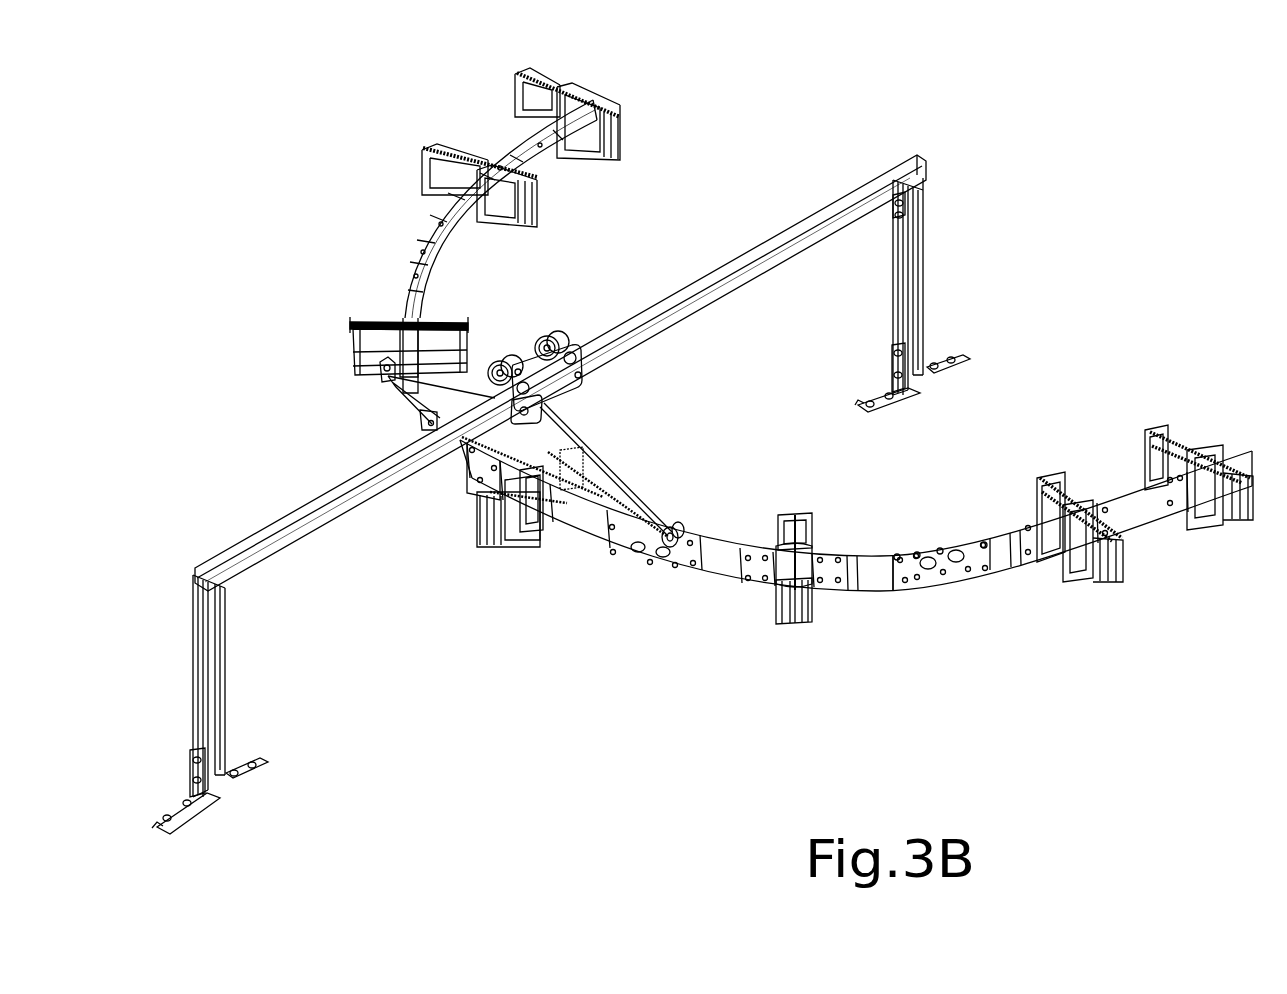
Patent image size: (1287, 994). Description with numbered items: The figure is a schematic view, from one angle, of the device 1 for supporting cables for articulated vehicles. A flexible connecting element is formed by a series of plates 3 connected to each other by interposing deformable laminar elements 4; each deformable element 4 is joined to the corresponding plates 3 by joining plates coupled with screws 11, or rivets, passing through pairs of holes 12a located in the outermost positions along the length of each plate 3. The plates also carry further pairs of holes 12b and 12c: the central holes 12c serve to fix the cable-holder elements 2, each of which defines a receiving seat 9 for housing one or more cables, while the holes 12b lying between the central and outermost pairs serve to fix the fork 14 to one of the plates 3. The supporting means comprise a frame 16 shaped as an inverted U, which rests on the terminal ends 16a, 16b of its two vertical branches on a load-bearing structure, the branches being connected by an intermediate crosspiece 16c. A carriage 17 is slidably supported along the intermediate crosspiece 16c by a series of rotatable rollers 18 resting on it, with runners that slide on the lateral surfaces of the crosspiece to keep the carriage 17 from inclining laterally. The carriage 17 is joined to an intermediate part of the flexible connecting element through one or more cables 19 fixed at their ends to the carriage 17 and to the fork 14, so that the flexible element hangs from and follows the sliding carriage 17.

The device for supporting cables 1 is at (1099, 184).
The cable-holder element 2 is at (415, 168).
The plate 3 is at (929, 576).
The deformable laminar element 4 is at (871, 584).
The receiving seat 9 is at (457, 165).
The screw 11 is at (985, 541).
The hole 12a is at (883, 533).
The hole 12b is at (917, 546).
The hole 12c is at (940, 548).
The fork 14 is at (407, 398).
The frame 16 is at (736, 232).
The terminal end 16a is at (245, 786).
The terminal end 16b is at (941, 352).
The intermediate crosspiece 16c is at (864, 188).
The carriage 17 is at (588, 393).
The rotatable roller 18 is at (566, 336).
The cable 19 is at (618, 482).